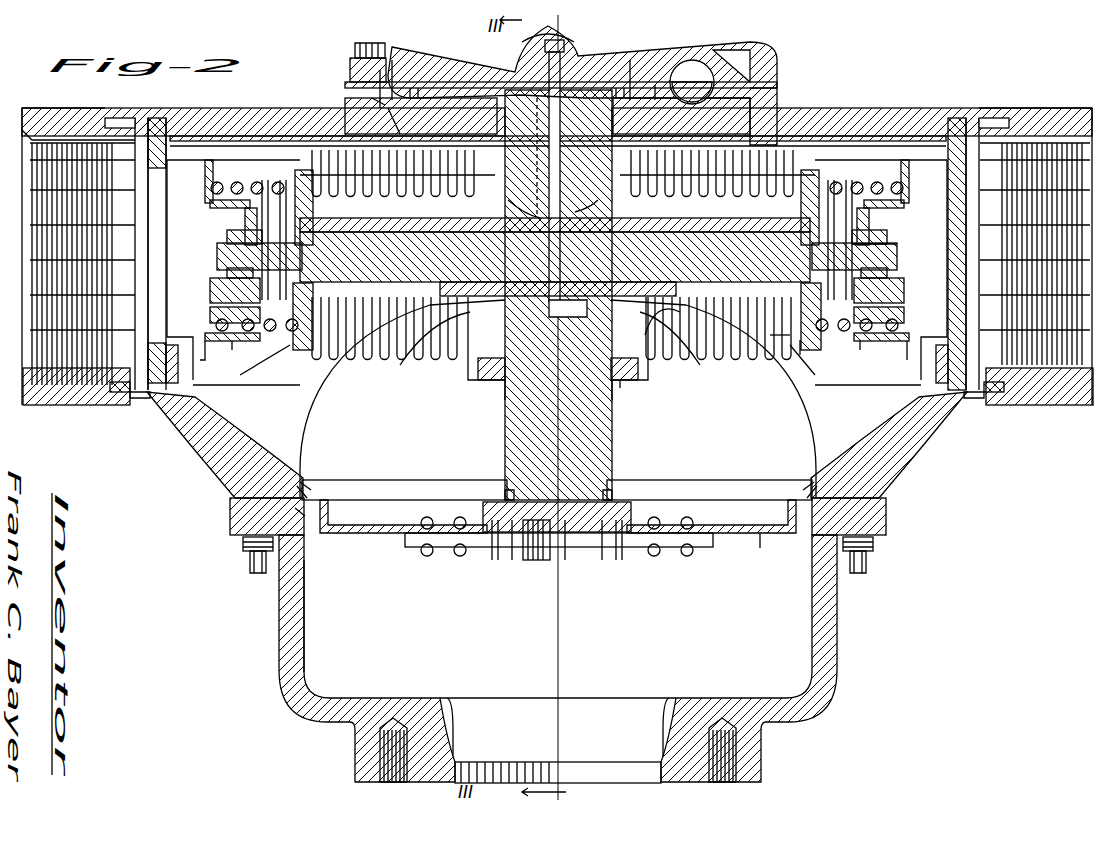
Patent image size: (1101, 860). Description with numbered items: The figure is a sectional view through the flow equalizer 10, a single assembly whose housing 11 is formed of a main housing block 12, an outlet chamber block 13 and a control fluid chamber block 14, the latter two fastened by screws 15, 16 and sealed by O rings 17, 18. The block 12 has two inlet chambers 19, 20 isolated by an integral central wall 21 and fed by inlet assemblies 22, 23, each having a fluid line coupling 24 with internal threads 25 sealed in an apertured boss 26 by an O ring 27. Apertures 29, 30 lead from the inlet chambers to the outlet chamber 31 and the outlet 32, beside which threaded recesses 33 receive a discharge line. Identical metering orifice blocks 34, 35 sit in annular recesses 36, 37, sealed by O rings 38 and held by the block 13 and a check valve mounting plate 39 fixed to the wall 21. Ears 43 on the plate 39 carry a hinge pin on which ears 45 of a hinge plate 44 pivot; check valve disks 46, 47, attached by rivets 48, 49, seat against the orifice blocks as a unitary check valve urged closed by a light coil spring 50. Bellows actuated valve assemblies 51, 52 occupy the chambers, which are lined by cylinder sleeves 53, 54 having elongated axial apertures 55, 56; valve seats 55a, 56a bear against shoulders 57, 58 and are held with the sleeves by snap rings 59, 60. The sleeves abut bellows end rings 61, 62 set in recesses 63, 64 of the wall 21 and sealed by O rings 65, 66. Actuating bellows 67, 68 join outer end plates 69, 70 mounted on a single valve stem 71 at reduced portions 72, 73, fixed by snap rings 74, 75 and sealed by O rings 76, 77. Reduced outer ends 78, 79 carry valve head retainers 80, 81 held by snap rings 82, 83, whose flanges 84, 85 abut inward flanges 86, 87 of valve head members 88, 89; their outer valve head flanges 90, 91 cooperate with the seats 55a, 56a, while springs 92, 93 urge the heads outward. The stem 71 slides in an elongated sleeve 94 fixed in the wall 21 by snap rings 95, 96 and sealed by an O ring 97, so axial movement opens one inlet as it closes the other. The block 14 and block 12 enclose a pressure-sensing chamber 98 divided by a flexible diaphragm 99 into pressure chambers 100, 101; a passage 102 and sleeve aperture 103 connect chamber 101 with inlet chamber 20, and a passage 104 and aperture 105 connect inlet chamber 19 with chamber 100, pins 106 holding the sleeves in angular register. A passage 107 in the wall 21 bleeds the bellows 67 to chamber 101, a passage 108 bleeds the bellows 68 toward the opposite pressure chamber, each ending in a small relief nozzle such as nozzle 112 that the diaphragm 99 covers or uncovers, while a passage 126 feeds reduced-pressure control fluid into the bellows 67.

The flow equalizer 10 is at (193, 472).
The housing 11 is at (908, 460).
The main housing block 12 is at (872, 122).
The outlet chamber block 13 is at (836, 665).
The control fluid chamber block 14 is at (768, 50).
The screws 15 is at (250, 563).
The screws 16 is at (366, 44).
The O ring 17 is at (298, 512).
The O ring 18 is at (394, 75).
The inlet chamber 19 is at (834, 432).
The inlet chamber 20 is at (284, 410).
The central wall 21 is at (520, 430).
The inlet assembly 22 is at (1004, 93).
The inlet assembly 23 is at (100, 92).
The fluid line coupling 24 is at (62, 392).
The internal threads 25 is at (52, 175).
The inlet apertured boss 26 is at (118, 400).
The O ring 27 is at (112, 392).
The aperture 29 is at (716, 443).
The aperture 30 is at (400, 443).
The outlet chamber 31 is at (678, 652).
The outlet 32 is at (616, 766).
The threaded recesses 33 is at (380, 760).
The flow metering orifice block 34 is at (740, 524).
The flow metering orifice block 35 is at (372, 492).
The annular recess 36 is at (612, 494).
The annular recess 37 is at (505, 494).
The O rings 38 is at (304, 486).
The check valve mounting plate 39 is at (585, 532).
The ears 43 is at (495, 552).
The hinge plate 44 is at (570, 545).
The ears 45 is at (512, 556).
The check valve disk 46 is at (762, 548).
The check valve disk 47 is at (388, 532).
The rivet 48 is at (688, 556).
The rivet 49 is at (432, 548).
The coil spring 50 is at (536, 560).
The bellows actuated valve assembly 51 is at (820, 349).
The bellows actuated valve assembly 52 is at (258, 380).
The cylinder sleeve 53 is at (836, 137).
The cylinder sleeve 54 is at (250, 130).
The elongated axial aperture 55 is at (935, 340).
The valve seat 55a is at (958, 185).
The elongated axial aperture 56 is at (195, 340).
The valve seat 56a is at (212, 188).
The shoulder 57 is at (950, 130).
The shoulder 58 is at (170, 140).
The resilient snap ring 59 is at (970, 125).
The resilient snap ring 60 is at (142, 125).
The bellows end plate 61 is at (622, 368).
The bellows end plate 62 is at (486, 370).
The recess 63 is at (505, 388).
The recess 64 is at (614, 388).
The O ring 65 is at (628, 385).
The O ring 66 is at (470, 384).
The actuating bellows 67 is at (700, 365).
The actuating bellows 68 is at (400, 365).
The bellows outer end plate 69 is at (800, 358).
The bellows outer end plate 70 is at (314, 348).
The valve stem 71 is at (370, 338).
The intermediate reduced end portion 72 is at (830, 228).
The intermediate reduced end portion 73 is at (284, 228).
The resilient snap ring 74 is at (816, 330).
The resilient snap ring 75 is at (278, 331).
The O ring 76 is at (836, 331).
The O ring 77 is at (300, 322).
The reduced outer end 78 is at (890, 260).
The reduced outer end 79 is at (228, 256).
The valve head retainer 80 is at (880, 240).
The valve head retainer 81 is at (245, 222).
The snap ring 82 is at (892, 290).
The snap ring 83 is at (227, 272).
The radial flange 84 is at (869, 215).
The radial flange 85 is at (250, 290).
The radially inwardly extending flange 86 is at (860, 202).
The radially inwardly extending flange 87 is at (258, 200).
The valve head member 88 is at (900, 330).
The valve head member 89 is at (236, 344).
The valve head flange 90 is at (905, 360).
The valve head flange 91 is at (205, 362).
The resilient spring 92 is at (856, 343).
The resilient spring 93 is at (256, 326).
The elongated sleeve 94 is at (770, 335).
The snap ring 95 is at (660, 335).
The snap ring 96 is at (478, 368).
The O ring 97 is at (508, 200).
The control fluid pressure-sensing chamber 98 is at (660, 85).
The flexible diaphragm 99 is at (695, 60).
The pressure chamber 100 is at (638, 60).
The pressure chamber 101 is at (428, 82).
The passage 102 is at (375, 100).
The aperture 103 is at (392, 136).
The fluid passage 104 is at (760, 90).
The aperture 105 is at (760, 136).
The pins 106 is at (455, 112).
The passage 107 is at (598, 200).
The fluid passage 108 is at (566, 44).
The pressure relief nozzle 112 is at (552, 48).
The passage 126 is at (648, 380).